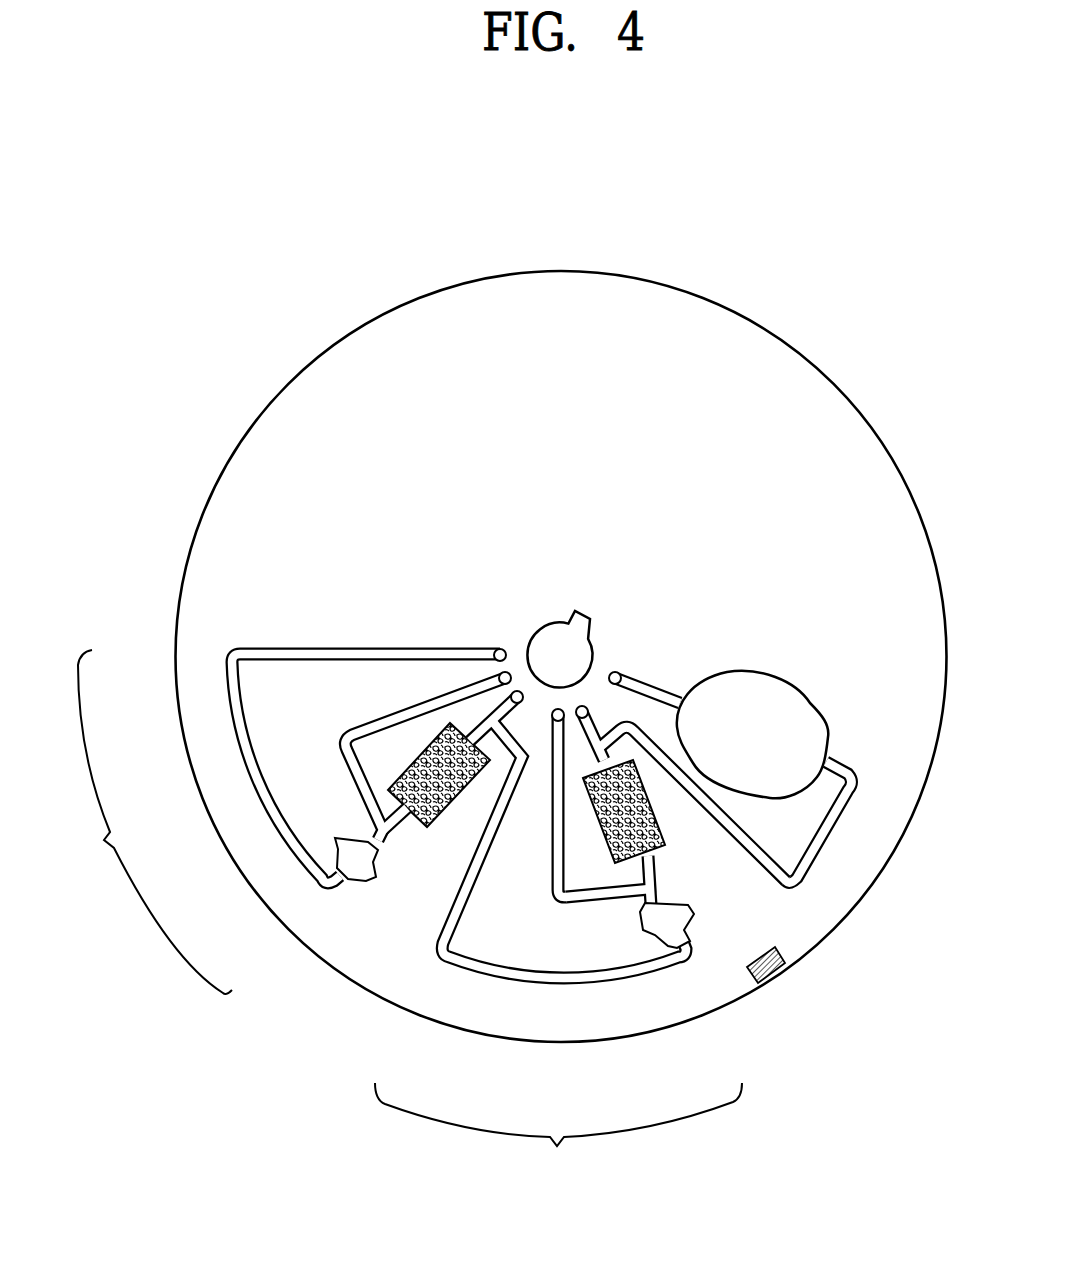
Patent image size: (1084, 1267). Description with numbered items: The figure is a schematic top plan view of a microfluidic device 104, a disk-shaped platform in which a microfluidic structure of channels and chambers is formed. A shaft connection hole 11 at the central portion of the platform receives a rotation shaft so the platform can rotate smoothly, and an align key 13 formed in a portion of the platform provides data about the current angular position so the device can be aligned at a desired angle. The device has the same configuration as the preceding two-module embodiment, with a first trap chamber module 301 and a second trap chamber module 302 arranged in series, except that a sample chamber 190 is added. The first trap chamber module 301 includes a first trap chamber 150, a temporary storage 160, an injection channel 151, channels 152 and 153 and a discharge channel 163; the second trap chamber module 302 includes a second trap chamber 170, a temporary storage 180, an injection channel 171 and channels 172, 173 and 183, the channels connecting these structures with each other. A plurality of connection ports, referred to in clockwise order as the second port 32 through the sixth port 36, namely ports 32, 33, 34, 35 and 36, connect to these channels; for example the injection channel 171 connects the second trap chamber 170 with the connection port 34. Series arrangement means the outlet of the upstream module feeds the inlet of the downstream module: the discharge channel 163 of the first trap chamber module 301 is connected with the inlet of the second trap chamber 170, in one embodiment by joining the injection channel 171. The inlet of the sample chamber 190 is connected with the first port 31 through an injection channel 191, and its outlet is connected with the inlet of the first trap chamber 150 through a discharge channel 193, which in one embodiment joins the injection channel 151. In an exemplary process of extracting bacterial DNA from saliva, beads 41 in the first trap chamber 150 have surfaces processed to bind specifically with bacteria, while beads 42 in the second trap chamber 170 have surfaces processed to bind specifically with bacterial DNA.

The microfluidic device 104 is at (240, 328).
The shaft connection hole 11 is at (587, 617).
The align key 13 is at (770, 978).
The connection port 31 is at (619, 672).
The connection port 32 is at (592, 706).
The connection port 33 is at (552, 727).
The connection port 34 is at (518, 690).
The connection port 35 is at (505, 671).
The connection port 36 is at (497, 649).
The beads 41 is at (667, 826).
The beads 42 is at (387, 737).
The trap chamber 150 is at (648, 790).
The injection channel 151 is at (552, 821).
The channel 152 is at (663, 883).
The channel 153 is at (605, 905).
The temporary storage 160 is at (660, 932).
The discharge channel 163 is at (532, 990).
The trap chamber 170 is at (433, 795).
The injection channel 171 is at (450, 730).
The channel 172 is at (392, 845).
The channel 173 is at (330, 852).
The temporary storage 180 is at (321, 794).
The channel 183 is at (245, 772).
The sample chamber 190 is at (778, 688).
The injection channel 191 is at (668, 685).
The discharge channel 193 is at (833, 840).
The first trap chamber module 301 is at (558, 1135).
The second trap chamber module 302 is at (141, 822).